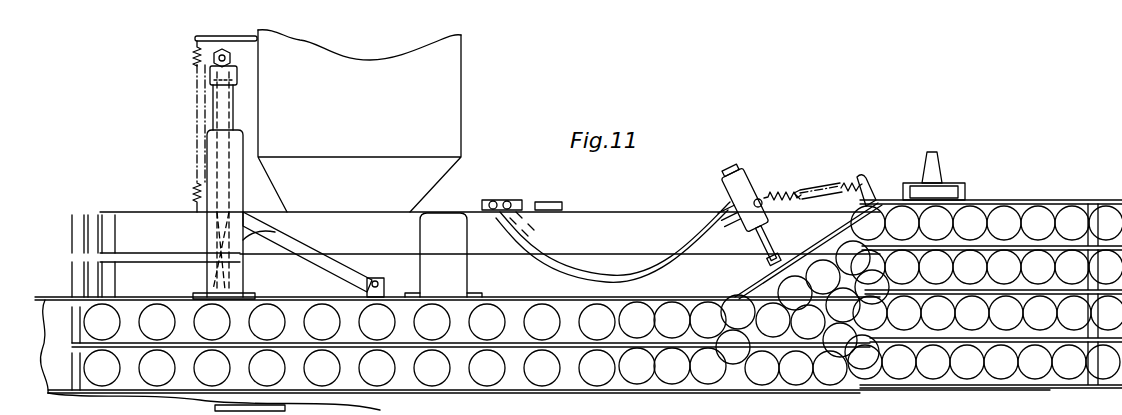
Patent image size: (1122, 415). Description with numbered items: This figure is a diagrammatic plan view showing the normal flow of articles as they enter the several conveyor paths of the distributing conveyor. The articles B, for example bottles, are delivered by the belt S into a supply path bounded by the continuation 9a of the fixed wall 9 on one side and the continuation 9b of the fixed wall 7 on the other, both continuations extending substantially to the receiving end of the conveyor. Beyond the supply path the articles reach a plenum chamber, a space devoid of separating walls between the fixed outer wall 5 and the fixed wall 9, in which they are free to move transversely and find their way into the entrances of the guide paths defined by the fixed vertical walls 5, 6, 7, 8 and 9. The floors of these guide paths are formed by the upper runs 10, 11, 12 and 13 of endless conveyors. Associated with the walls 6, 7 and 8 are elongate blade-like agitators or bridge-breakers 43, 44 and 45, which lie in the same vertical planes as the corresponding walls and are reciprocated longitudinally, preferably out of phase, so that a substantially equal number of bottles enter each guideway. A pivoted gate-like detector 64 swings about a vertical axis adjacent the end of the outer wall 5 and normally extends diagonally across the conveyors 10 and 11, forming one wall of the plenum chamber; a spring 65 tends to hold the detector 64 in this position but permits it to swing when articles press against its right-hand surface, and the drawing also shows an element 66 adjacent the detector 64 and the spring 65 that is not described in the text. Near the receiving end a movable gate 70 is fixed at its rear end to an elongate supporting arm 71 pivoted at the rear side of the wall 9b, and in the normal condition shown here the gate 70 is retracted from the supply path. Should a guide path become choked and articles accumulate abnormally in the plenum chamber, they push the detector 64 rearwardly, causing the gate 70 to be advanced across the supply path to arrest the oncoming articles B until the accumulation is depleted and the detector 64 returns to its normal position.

The belt S is at (50, 310).
The fixed outer wall 5 is at (1060, 203).
The fixed vertical wall 6 is at (992, 242).
The fixed vertical wall 7 is at (993, 288).
The fixed vertical wall 8 is at (996, 334).
The fixed wall 9 is at (1082, 388).
The continuation of the fixed wall 9a is at (495, 391).
The continuation of the fixed wall 9b is at (436, 296).
The upper run of endless conveyor 10 is at (590, 222).
The upper run of endless conveyor 11 is at (457, 277).
The upper run of endless conveyor 12 is at (578, 332).
The upper run of endless conveyor 13 is at (617, 378).
The agitator 43 is at (986, 267).
The agitator 44 is at (987, 313).
The agitator 45 is at (984, 362).
The pivoted gate-like detector 64 is at (822, 246).
The spring 65 is at (813, 176).
The cylinder 66 is at (760, 186).
The movable gate 70 is at (206, 239).
The supporting arm 71 is at (298, 252).
The articles B is at (1004, 223).